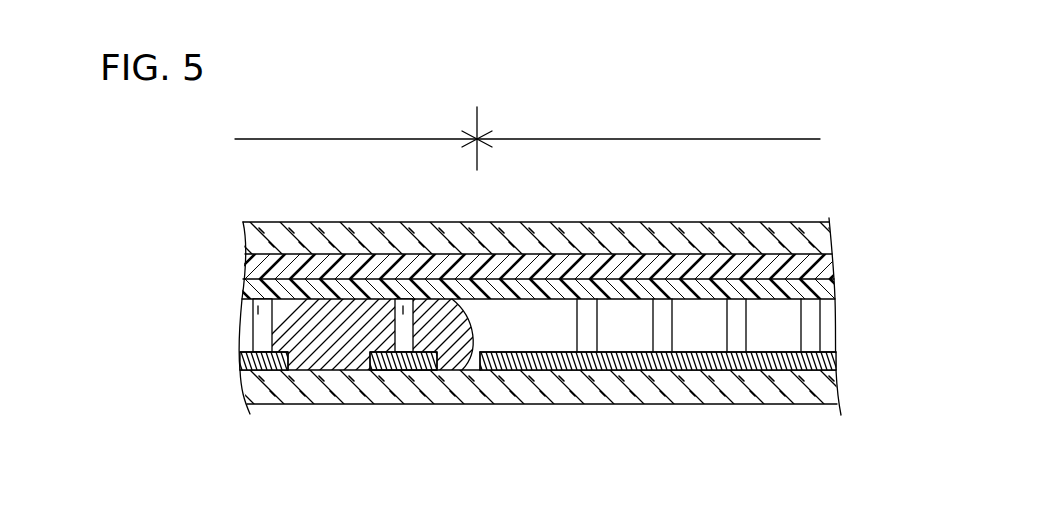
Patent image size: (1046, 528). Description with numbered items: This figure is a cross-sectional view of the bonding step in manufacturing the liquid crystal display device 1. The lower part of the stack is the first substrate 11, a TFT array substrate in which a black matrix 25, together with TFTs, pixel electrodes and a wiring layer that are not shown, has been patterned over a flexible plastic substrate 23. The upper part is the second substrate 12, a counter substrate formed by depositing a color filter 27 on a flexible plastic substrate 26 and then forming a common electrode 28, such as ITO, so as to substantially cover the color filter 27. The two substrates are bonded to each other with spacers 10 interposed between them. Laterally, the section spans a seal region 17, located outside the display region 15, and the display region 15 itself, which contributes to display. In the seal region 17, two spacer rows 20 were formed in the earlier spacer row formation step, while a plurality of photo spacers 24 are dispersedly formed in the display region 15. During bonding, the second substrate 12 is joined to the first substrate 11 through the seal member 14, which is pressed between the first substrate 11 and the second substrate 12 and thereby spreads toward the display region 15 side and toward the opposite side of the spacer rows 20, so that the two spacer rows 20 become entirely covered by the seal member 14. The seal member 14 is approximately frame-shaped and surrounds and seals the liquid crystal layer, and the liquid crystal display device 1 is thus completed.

The liquid crystal display device 1 is at (207, 244).
The spacers 10 is at (403, 312).
The spacer rows 20 is at (333, 325).
The first substrate 11 is at (290, 405).
The second substrate 12 is at (262, 225).
The seal member 14 is at (337, 370).
The display region 15 is at (648, 138).
The seal region 17 is at (348, 138).
The flexible plastic substrate 23 is at (388, 372).
The photo spacers 24 is at (737, 333).
The black matrix 25 is at (502, 371).
The flexible plastic substrate 26 is at (446, 222).
The color filter 27 is at (532, 260).
The common electrode 28 is at (630, 286).